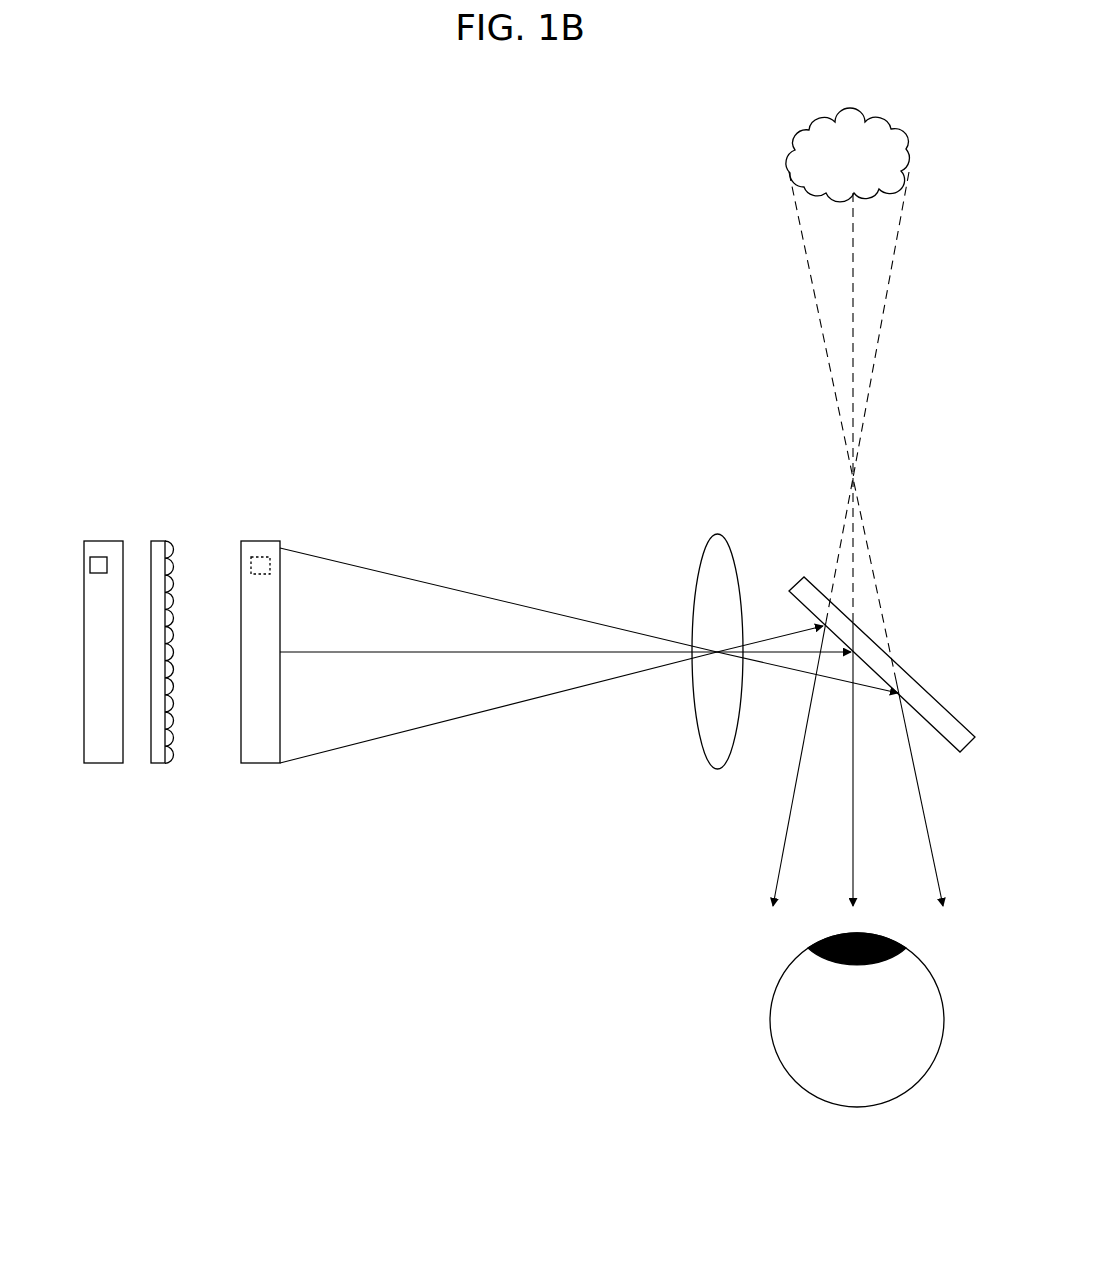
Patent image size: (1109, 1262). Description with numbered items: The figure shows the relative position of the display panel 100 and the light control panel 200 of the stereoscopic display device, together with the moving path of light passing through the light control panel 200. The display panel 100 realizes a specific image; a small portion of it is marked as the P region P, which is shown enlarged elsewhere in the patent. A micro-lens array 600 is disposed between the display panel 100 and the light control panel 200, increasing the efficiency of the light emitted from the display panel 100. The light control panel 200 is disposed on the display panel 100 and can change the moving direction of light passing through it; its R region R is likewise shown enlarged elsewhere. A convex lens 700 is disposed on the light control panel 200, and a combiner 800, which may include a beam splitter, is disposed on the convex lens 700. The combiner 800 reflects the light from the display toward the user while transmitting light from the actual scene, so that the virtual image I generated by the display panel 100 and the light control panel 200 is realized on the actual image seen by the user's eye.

The display panel 100 is at (105, 778).
The P region P is at (101, 556).
The micro-lens array 600 is at (158, 778).
The light control panel 200 is at (264, 778).
The R region R is at (261, 556).
The convex lens 700 is at (716, 781).
The combiner 800 is at (916, 672).
The virtual image I is at (908, 132).